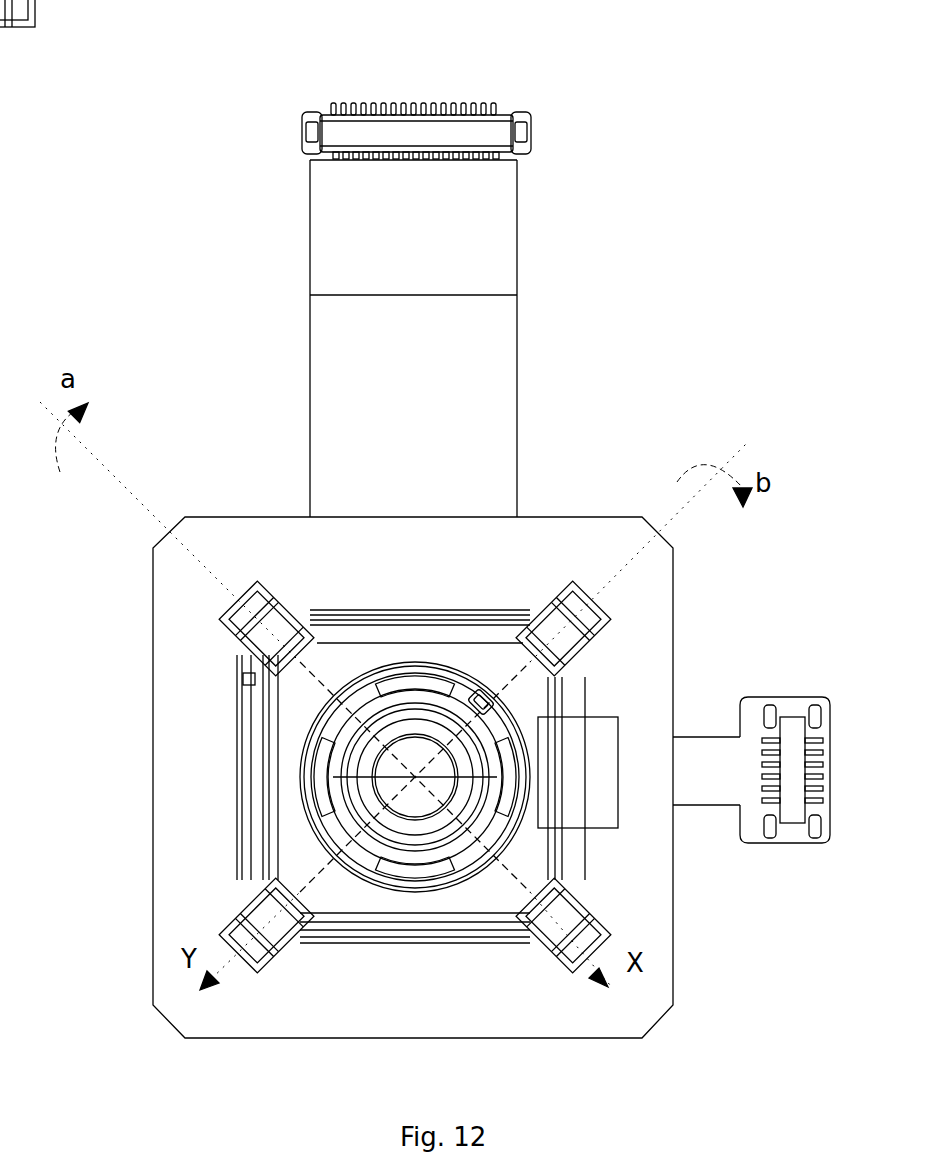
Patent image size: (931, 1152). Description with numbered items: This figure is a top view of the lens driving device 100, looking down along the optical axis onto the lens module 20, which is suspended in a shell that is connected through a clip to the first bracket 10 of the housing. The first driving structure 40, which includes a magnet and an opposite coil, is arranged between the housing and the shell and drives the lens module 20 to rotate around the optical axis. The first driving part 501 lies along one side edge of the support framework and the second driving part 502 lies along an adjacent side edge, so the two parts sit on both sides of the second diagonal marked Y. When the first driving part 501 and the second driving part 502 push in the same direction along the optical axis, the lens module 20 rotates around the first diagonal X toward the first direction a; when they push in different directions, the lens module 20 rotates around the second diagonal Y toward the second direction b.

The lens driving device 100 is at (240, 50).
The first bracket 10 is at (185, 610).
The lens module 20 is at (288, 742).
The first driving structure 40 is at (608, 725).
The first driving part 501 is at (243, 845).
The second driving part 502 is at (365, 943).